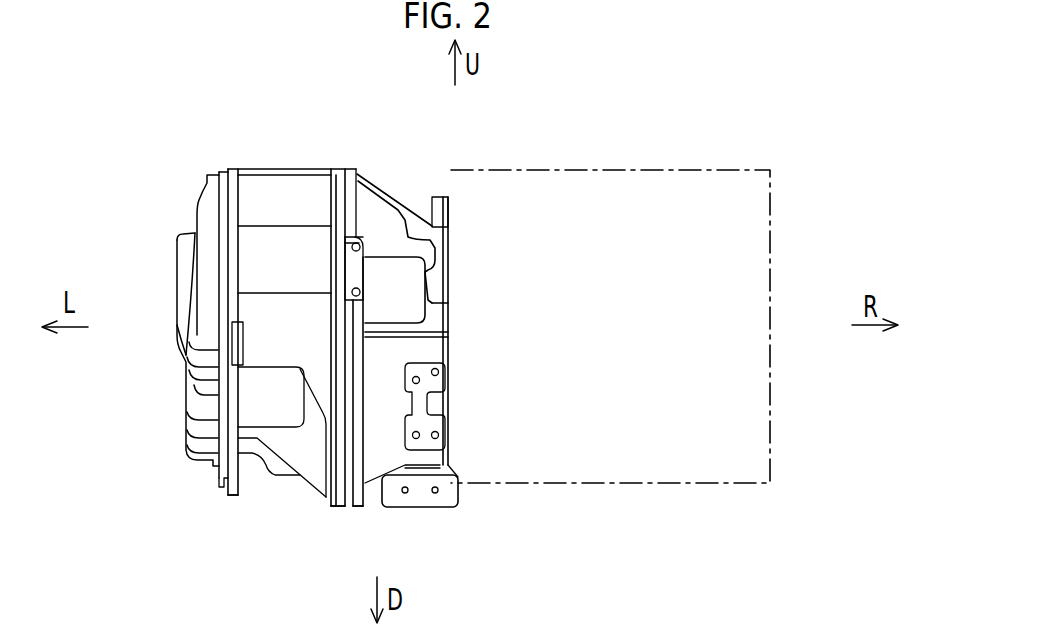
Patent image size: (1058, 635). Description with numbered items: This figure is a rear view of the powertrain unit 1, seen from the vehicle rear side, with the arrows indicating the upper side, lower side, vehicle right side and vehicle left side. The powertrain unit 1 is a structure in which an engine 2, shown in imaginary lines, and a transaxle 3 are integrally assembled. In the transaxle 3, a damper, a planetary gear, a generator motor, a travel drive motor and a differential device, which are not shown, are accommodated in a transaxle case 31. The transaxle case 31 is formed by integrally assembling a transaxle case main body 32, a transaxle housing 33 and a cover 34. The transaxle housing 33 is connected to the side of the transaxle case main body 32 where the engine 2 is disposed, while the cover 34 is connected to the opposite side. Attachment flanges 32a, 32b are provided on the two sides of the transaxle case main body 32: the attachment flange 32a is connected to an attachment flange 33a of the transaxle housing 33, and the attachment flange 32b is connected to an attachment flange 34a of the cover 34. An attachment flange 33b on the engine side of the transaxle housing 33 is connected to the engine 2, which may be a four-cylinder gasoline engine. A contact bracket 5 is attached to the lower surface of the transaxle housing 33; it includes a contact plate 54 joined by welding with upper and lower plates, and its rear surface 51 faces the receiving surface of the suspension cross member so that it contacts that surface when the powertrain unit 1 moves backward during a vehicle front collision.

The powertrain unit 1 is at (156, 100).
The engine 2 is at (612, 160).
The transaxle 3 is at (272, 166).
The transaxle case 31 is at (337, 166).
The transaxle case main body 32 is at (268, 470).
The attachment flange 32a is at (337, 503).
The attachment flange 32b is at (230, 498).
The transaxle housing 33 is at (377, 217).
The attachment flange 33a is at (360, 505).
The attachment flange 33b is at (440, 205).
The cover 34 is at (205, 270).
The attachment flange 34a is at (223, 485).
The contact bracket 5 is at (455, 517).
The rear surface 51 is at (428, 517).
The contact plate 54 is at (423, 500).